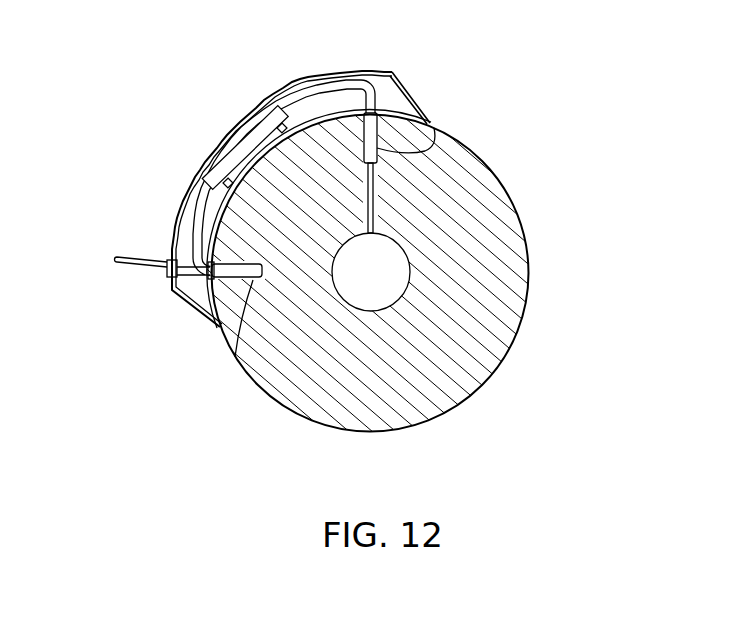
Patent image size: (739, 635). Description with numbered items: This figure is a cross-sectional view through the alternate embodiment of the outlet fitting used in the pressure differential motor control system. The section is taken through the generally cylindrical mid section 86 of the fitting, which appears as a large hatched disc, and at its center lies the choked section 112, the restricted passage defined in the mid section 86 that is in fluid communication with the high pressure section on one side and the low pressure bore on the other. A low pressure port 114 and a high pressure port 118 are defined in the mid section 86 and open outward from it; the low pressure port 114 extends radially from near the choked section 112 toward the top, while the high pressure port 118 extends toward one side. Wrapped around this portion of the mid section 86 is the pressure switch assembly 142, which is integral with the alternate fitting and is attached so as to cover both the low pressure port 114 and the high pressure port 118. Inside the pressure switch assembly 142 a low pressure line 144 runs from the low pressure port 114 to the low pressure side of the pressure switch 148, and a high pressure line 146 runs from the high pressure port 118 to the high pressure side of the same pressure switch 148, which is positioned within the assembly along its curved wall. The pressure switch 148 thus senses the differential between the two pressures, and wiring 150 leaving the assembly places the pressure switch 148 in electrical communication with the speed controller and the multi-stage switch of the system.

The mid section 86 is at (525, 233).
The choked section 112 is at (405, 263).
The low pressure port 114 is at (452, 150).
The high pressure port 118 is at (237, 287).
The pressure switch assembly 142 is at (372, 71).
The low pressure line 144 is at (307, 92).
The high pressure line 146 is at (193, 218).
The pressure switch 148 is at (240, 140).
The wiring 150 is at (130, 257).